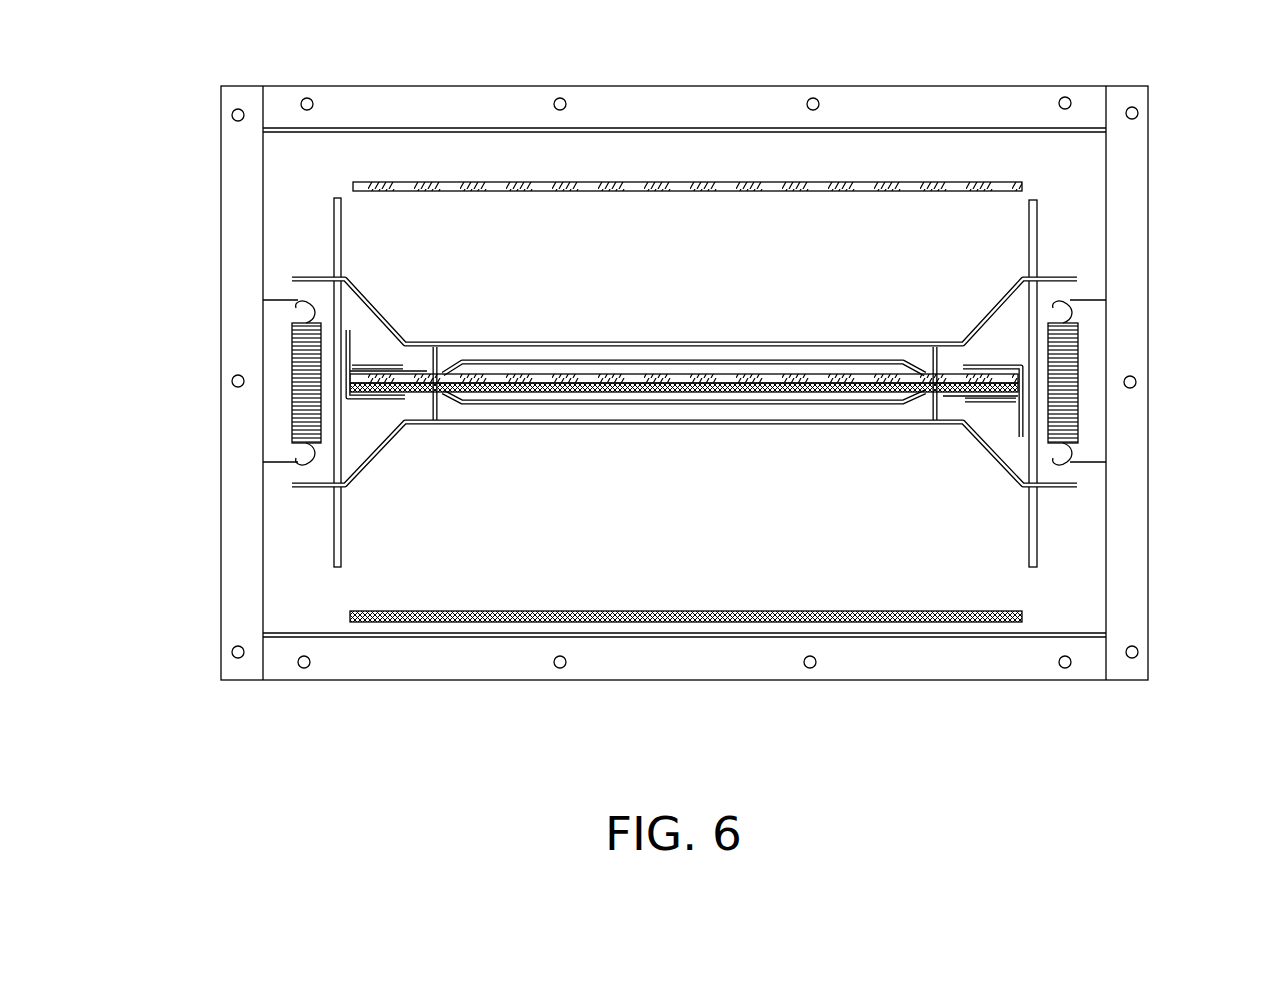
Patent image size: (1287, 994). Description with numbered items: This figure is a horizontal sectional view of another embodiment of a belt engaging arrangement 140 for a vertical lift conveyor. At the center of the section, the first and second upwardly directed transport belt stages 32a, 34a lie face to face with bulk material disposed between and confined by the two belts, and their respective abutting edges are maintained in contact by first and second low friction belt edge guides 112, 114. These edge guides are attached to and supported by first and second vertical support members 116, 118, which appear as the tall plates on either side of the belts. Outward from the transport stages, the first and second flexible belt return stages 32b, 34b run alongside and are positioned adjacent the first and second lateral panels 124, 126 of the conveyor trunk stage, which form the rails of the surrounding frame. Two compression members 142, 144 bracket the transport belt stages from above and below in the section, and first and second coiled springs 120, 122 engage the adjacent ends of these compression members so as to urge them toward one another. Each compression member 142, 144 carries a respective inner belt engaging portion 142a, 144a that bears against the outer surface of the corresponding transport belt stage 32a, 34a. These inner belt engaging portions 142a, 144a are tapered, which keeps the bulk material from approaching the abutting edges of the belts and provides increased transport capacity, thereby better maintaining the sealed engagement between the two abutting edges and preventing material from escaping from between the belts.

The first low friction belt edge guide 112 is at (370, 400).
The second low friction belt edge guide 114 is at (990, 368).
The first vertical support member 116 is at (333, 250).
The second vertical support member 118 is at (1034, 505).
The first coiled spring 120 is at (291, 382).
The second coiled spring 122 is at (1080, 380).
The first lateral panel 124 is at (628, 636).
The second lateral panel 126 is at (781, 130).
The belt engaging arrangement 140 is at (683, 401).
The compression member 142 is at (572, 343).
The compression member 144 is at (765, 422).
The inner belt engaging portion 142a is at (710, 362).
The inner belt engaging portion 144a is at (720, 402).
The second upwardly directed transport belt stage 34a is at (700, 373).
The first upwardly directed transport belt stage 32a is at (620, 392).
The second flexible belt return stage 34b is at (835, 186).
The first flexible belt return stage 32b is at (888, 622).